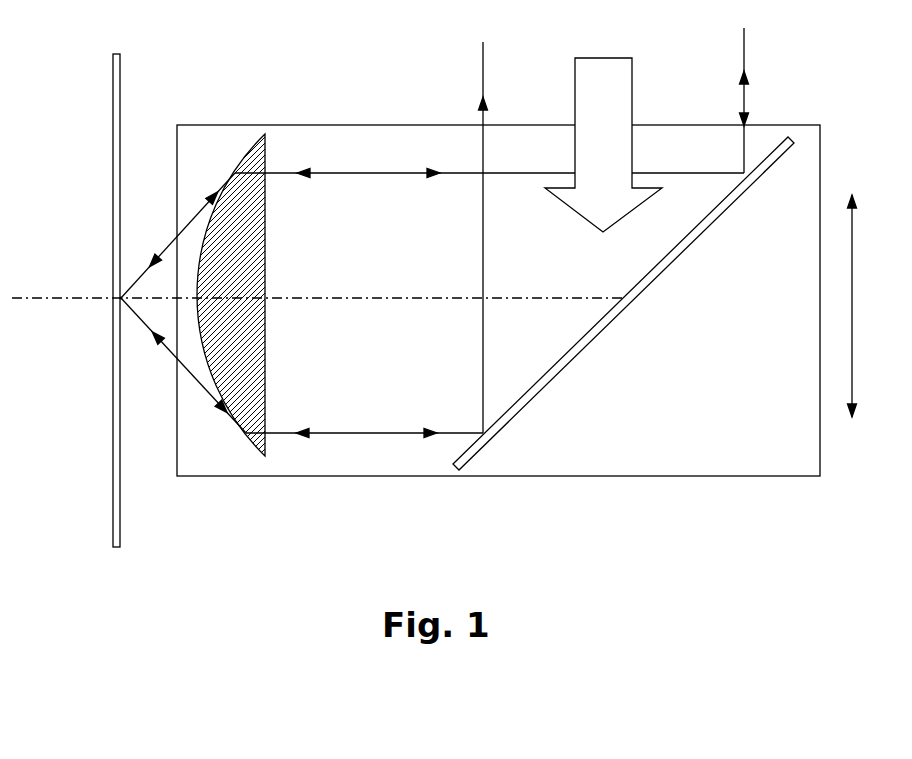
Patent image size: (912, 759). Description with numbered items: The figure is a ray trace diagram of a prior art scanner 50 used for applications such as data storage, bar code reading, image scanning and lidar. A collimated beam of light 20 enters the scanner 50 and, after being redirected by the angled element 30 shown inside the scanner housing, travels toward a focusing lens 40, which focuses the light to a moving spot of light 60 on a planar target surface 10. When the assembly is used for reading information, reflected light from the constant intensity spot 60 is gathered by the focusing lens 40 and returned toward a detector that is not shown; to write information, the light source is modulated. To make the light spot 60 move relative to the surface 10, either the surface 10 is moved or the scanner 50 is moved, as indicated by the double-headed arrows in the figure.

The planar target surface 10 is at (123, 87).
The collimated beam of light 20 is at (616, 108).
The beam splitter 30 is at (699, 226).
The focusing lens 40 is at (265, 218).
The scanner 50 is at (390, 477).
The spot of light 60 is at (123, 300).